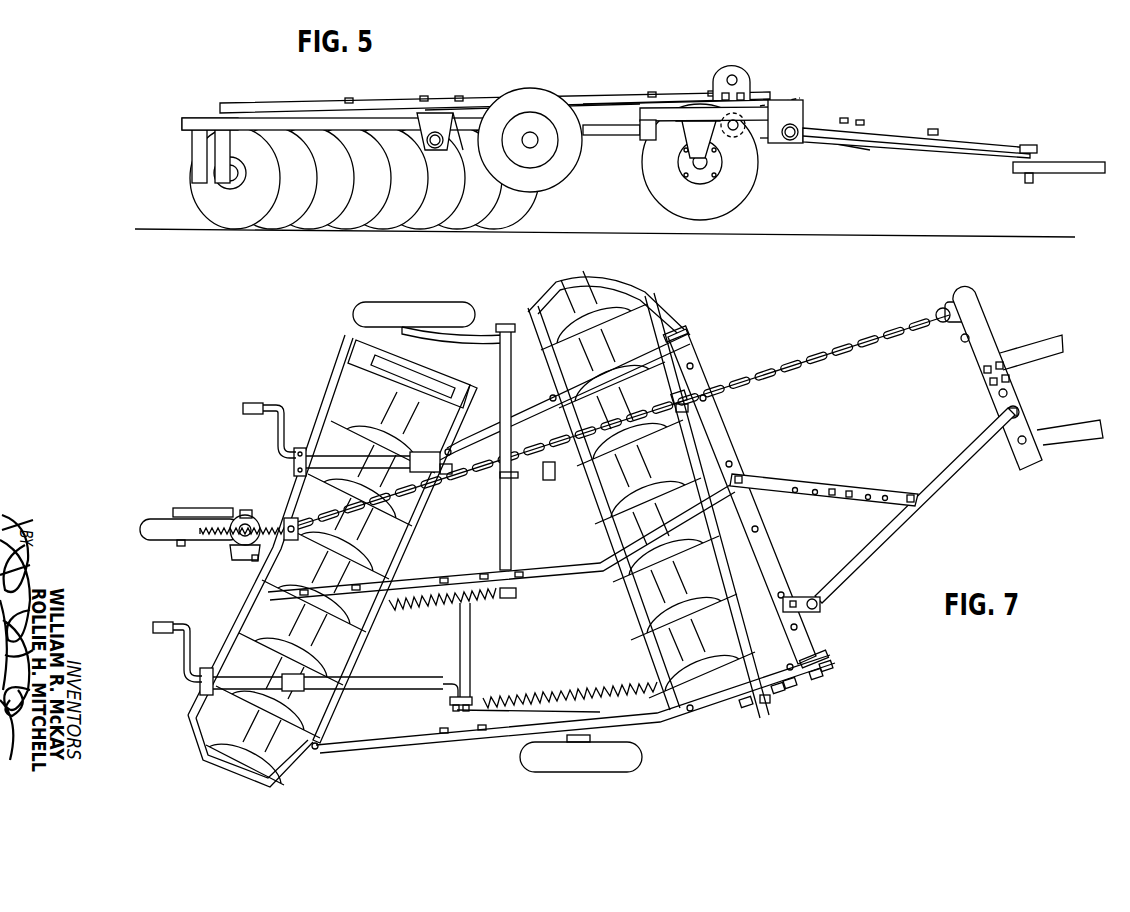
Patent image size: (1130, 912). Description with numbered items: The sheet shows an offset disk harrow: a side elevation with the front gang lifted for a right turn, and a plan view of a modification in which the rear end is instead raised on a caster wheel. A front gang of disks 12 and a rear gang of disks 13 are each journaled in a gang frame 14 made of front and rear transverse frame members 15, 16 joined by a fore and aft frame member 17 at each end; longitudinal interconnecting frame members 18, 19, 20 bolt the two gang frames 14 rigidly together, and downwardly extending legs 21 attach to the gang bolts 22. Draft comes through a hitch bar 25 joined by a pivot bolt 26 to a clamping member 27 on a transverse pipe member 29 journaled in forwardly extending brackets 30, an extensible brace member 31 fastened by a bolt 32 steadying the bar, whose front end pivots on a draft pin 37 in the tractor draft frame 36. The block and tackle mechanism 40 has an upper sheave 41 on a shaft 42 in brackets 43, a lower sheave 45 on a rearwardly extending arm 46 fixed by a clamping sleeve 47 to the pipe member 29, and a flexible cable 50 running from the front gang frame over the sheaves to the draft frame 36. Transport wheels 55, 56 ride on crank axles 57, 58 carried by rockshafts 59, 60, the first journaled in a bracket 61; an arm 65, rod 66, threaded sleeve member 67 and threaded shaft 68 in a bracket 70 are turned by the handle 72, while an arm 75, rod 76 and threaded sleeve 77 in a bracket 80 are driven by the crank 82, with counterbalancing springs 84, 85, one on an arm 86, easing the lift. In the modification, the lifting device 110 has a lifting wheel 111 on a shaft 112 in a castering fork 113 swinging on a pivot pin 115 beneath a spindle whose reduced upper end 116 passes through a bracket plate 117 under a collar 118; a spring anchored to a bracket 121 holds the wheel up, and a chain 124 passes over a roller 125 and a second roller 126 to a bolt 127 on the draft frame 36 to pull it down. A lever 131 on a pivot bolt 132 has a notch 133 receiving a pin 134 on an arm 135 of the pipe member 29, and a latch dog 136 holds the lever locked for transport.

In FIG. 5, the front gang of disks 12 is at (747, 190).
In FIG. 7, the front gang of disks 12 is at (605, 327).
In FIG. 5, the rear gang of disks 13 is at (317, 223).
In FIG. 7, the rear gang of disks 13 is at (348, 400).
In FIG. 7, the gang frame 14 is at (378, 327).
In FIG. 7, the front transverse frame member 15 is at (404, 535).
In FIG. 7, the rear transverse frame member 16 is at (243, 595).
In FIG. 5, the fore and aft extending frame member 17 is at (650, 112).
In FIG. 7, the interconnecting frame member 18 is at (482, 418).
In FIG. 7, the center frame member 19 is at (582, 572).
In FIG. 5, the outer longitudinal frame member 20 is at (355, 103).
In FIG. 7, the outer longitudinal frame member 20 is at (662, 720).
In FIG. 5, the downwardly extending leg 21 is at (200, 153).
In FIG. 5, the gang bolt 22 is at (697, 172).
In FIG. 5, the hitch bar 25 is at (945, 146).
In FIG. 7, the hitch bar 25 is at (955, 467).
In FIG. 7, the pivot bolt 26 is at (820, 600).
In FIG. 7, the clamping member 27 is at (790, 597).
In FIG. 5, the transverse pipe member 29 is at (790, 140).
In FIG. 7, the transverse pipe member 29 is at (717, 417).
In FIG. 7, the forwardly extending bracket 30 is at (687, 338).
In FIG. 5, the extensible brace member 31 is at (878, 133).
In FIG. 7, the extensible brace member 31 is at (777, 473).
In FIG. 5, the bolt 32 is at (785, 110).
In FIG. 5, the transverse draft frame 36 is at (1068, 164).
In FIG. 7, the transverse draft frame 36 is at (1000, 398).
In FIG. 5, the draft pin 37 is at (1035, 145).
In FIG. 7, the draft pin 37 is at (1018, 408).
In FIG. 5, the block and tackle mechanism 40 is at (705, 67).
In FIG. 5, the upper sheave 41 is at (735, 74).
In FIG. 5, the shaft 42 is at (730, 87).
In FIG. 5, the bracket 43 is at (740, 93).
In FIG. 5, the lower sheave 45 is at (755, 103).
In FIG. 5, the rearwardly extending arm 46 is at (762, 137).
In FIG. 5, the clamping sleeve 47 is at (790, 130).
In FIG. 5, the flexible cable 50 is at (820, 143).
In FIG. 7, the transport wheel 55 is at (430, 308).
In FIG. 5, the transport wheel 56 is at (537, 87).
In FIG. 7, the transport wheel 56 is at (584, 760).
In FIG. 7, the crank axle 57 is at (452, 340).
In FIG. 5, the crank axle 58 is at (465, 145).
In FIG. 7, the crank axle 58 is at (513, 718).
In FIG. 5, the rockshaft 59 is at (607, 134).
In FIG. 7, the rockshaft 59 is at (510, 510).
In FIG. 7, the rockshaft 60 is at (470, 642).
In FIG. 5, the bracket 61 is at (641, 140).
In FIG. 7, the bracket 61 is at (508, 324).
In FIG. 7, the arm 65 is at (505, 478).
In FIG. 7, the rod 66 is at (555, 472).
In FIG. 7, the sleeve member 67 is at (447, 475).
In FIG. 7, the threaded shaft 68 is at (331, 462).
In FIG. 7, the bracket 70 is at (302, 448).
In FIG. 7, the handle 72 is at (252, 403).
In FIG. 7, the arm 75 is at (455, 703).
In FIG. 7, the rod 76 is at (457, 680).
In FIG. 7, the threaded sleeve 77 is at (383, 690).
In FIG. 7, the bracket 80 is at (207, 668).
In FIG. 7, the crank 82 is at (165, 623).
In FIG. 7, the counterbalancing spring 84 is at (435, 607).
In FIG. 7, the counterbalancing spring 85 is at (588, 687).
In FIG. 7, the arm 86 is at (515, 597).
In FIG. 7, the lifting device 110 is at (158, 479).
In FIG. 7, the lifting wheel 111 is at (147, 530).
In FIG. 7, the shaft 112 is at (182, 544).
In FIG. 7, the castering fork 113 is at (177, 540).
In FIG. 7, the pivot pin 115 is at (248, 510).
In FIG. 7, the reduced upper end 116 is at (240, 518).
In FIG. 7, the bracket plate 117 is at (247, 550).
In FIG. 7, the collar 118 is at (257, 520).
In FIG. 7, the bracket 121 is at (263, 567).
In FIG. 7, the chain 124 is at (807, 358).
In FIG. 7, the roller 125 is at (293, 522).
In FIG. 7, the second roller 126 is at (680, 402).
In FIG. 7, the bolt 127 is at (975, 305).
In FIG. 7, the lever 131 is at (748, 700).
In FIG. 7, the pivot bolt 132 is at (795, 684).
In FIG. 7, the notch 133 is at (780, 692).
In FIG. 7, the pin 134 is at (820, 673).
In FIG. 7, the arm 135 is at (828, 665).
In FIG. 7, the latch dog 136 is at (765, 702).